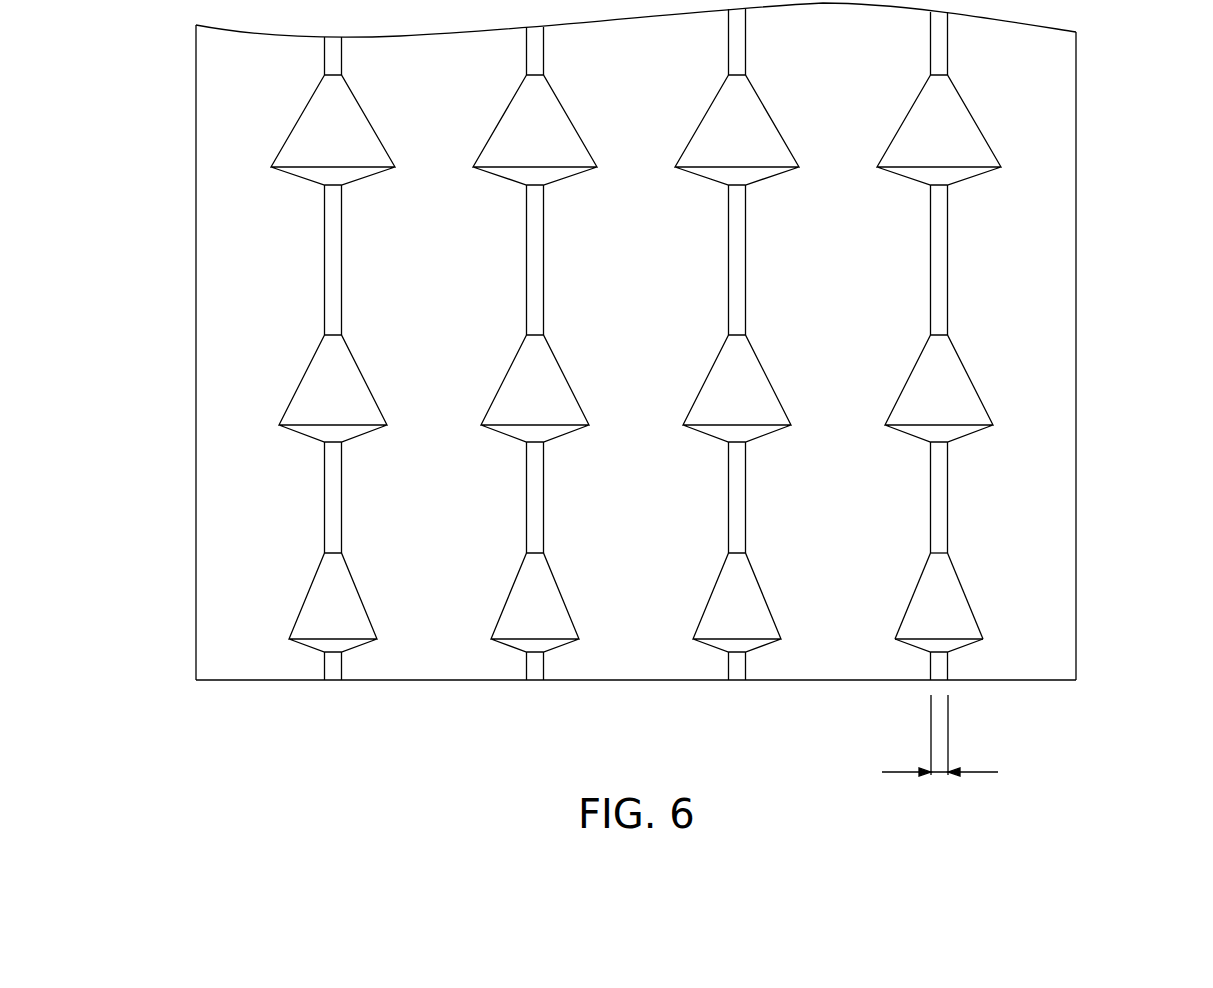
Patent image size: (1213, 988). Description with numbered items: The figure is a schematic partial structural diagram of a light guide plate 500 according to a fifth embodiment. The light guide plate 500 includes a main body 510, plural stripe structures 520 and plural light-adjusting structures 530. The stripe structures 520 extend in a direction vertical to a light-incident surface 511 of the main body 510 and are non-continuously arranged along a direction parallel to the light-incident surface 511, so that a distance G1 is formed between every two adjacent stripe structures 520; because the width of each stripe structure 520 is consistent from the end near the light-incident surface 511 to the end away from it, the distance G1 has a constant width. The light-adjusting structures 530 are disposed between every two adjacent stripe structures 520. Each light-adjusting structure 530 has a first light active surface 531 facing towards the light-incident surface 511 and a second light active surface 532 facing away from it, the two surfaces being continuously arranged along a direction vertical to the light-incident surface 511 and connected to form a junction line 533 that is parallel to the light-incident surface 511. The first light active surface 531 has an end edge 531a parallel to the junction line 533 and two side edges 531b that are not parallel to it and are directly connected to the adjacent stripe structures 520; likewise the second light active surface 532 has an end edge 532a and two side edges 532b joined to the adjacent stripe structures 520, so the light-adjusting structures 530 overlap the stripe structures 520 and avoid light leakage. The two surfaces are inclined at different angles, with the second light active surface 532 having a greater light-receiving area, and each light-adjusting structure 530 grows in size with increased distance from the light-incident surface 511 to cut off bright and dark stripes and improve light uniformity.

The light guide plate 500 is at (87, 62).
The main body 510 is at (1077, 165).
The light-incident surface 511 is at (648, 680).
The stripe structures 520 is at (1052, 453).
The light-adjusting structures 530 is at (955, 627).
The first light active surface 531 is at (1001, 704).
The end edge 531a is at (938, 653).
The side edges 531b is at (912, 648).
The second light active surface 532 is at (999, 567).
The end edge 532a is at (942, 552).
The side edges 532b is at (912, 593).
The junction line 533 is at (960, 642).
The distance G1 is at (940, 752).